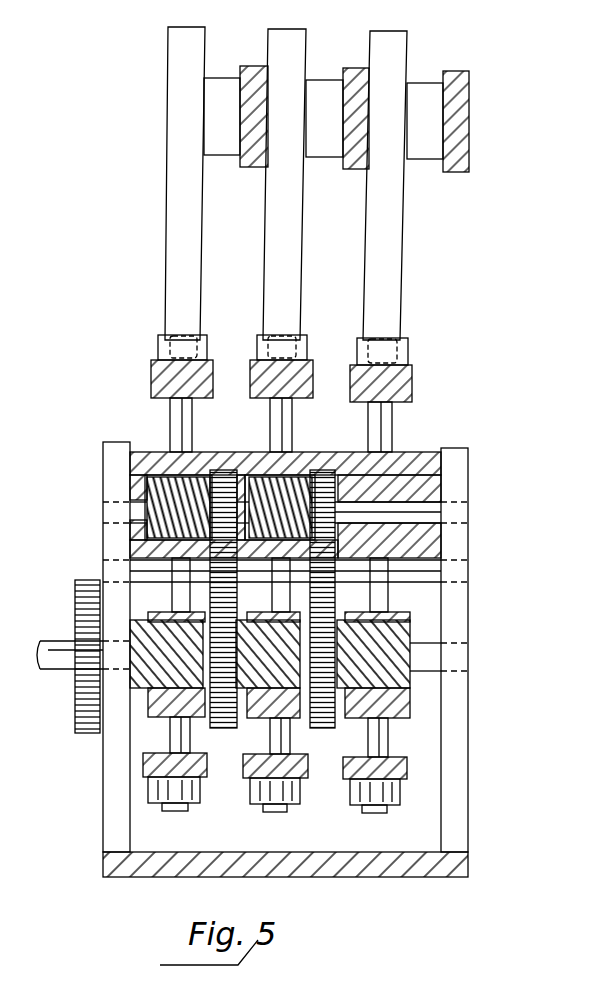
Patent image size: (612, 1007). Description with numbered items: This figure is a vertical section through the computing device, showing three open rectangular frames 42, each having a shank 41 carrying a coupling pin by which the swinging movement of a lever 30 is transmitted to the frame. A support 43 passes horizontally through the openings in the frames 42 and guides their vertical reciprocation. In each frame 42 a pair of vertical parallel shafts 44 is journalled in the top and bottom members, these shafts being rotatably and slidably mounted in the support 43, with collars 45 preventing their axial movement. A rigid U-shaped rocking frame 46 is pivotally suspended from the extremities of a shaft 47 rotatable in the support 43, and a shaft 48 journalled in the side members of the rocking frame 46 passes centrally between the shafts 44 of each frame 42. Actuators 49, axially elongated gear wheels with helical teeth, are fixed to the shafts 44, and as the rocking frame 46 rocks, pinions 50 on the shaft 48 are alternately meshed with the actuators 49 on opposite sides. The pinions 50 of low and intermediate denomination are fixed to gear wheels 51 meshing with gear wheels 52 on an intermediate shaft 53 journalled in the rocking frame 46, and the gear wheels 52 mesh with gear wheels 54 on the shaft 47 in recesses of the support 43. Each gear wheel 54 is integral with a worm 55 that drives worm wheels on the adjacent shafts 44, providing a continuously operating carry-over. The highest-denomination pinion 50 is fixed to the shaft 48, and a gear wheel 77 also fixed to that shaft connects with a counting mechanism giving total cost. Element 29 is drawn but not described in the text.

The cam block 29 is at (253, 66).
The lever 30 is at (234, 106).
The shank 41 is at (268, 213).
The open rectangular frame 42 is at (250, 390).
The support 43 is at (423, 452).
The vertical parallel shaft 44 is at (177, 417).
The collar 45 is at (160, 343).
The rocking frame 46 is at (452, 765).
The shaft 47 is at (432, 510).
The shaft 48 is at (430, 647).
The actuator 49 is at (138, 690).
The pinion 50 is at (253, 613).
The gear wheel 51 is at (217, 728).
The gear wheel 52 is at (190, 573).
The intermediate shaft 53 is at (428, 568).
The gear wheel 54 is at (237, 460).
The worm 55 is at (247, 457).
The gear wheel 77 is at (82, 703).